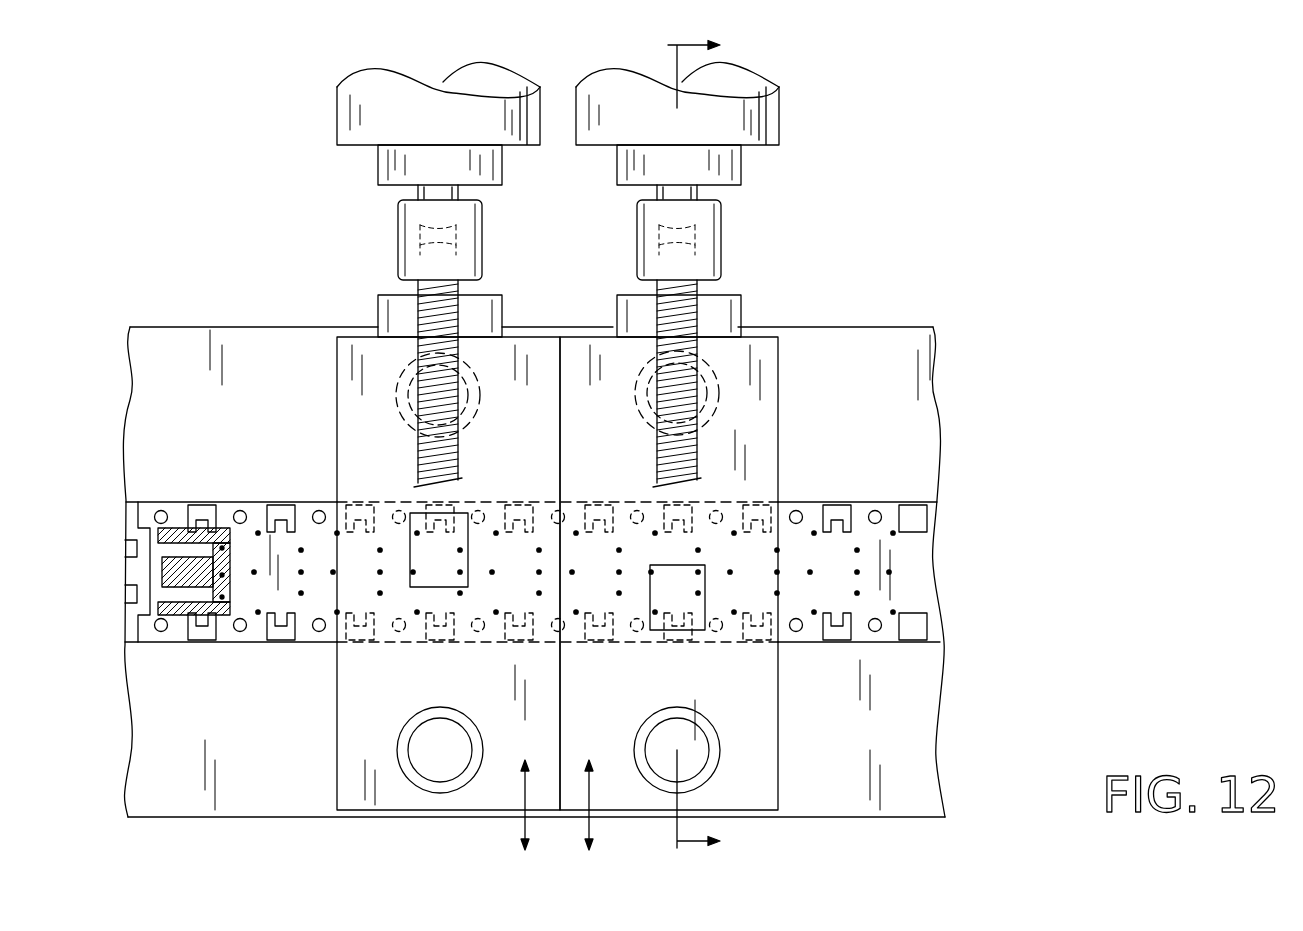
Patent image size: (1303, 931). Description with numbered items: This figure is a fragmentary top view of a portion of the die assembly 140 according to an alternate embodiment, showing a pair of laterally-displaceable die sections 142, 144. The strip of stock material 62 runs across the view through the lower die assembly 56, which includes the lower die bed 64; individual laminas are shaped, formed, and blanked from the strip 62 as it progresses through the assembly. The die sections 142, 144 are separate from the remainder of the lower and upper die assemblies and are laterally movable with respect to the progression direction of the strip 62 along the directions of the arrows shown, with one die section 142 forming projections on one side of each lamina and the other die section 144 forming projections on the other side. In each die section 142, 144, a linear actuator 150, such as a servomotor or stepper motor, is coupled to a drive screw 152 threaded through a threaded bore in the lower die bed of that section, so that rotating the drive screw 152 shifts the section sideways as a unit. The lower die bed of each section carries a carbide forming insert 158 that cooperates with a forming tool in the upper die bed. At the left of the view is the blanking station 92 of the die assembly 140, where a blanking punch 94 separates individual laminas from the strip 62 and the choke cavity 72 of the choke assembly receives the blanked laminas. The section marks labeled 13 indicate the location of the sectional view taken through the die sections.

The die assembly 140 is at (1020, 148).
The die section 142 is at (792, 312).
The die section 144 is at (338, 312).
The linear actuator 150 is at (350, 110).
The drive screw 152 is at (420, 390).
The carbide forming insert 158 is at (468, 540).
The strip of stock material 62 is at (917, 556).
The lower die assembly 56 is at (587, 593).
The lower die bed 64 is at (225, 800).
The blanking station 92 is at (188, 490).
The choke cavity 72 is at (178, 630).
The blanking punch 94 is at (227, 618).
The section line for FIG. 13 is at (713, 444).